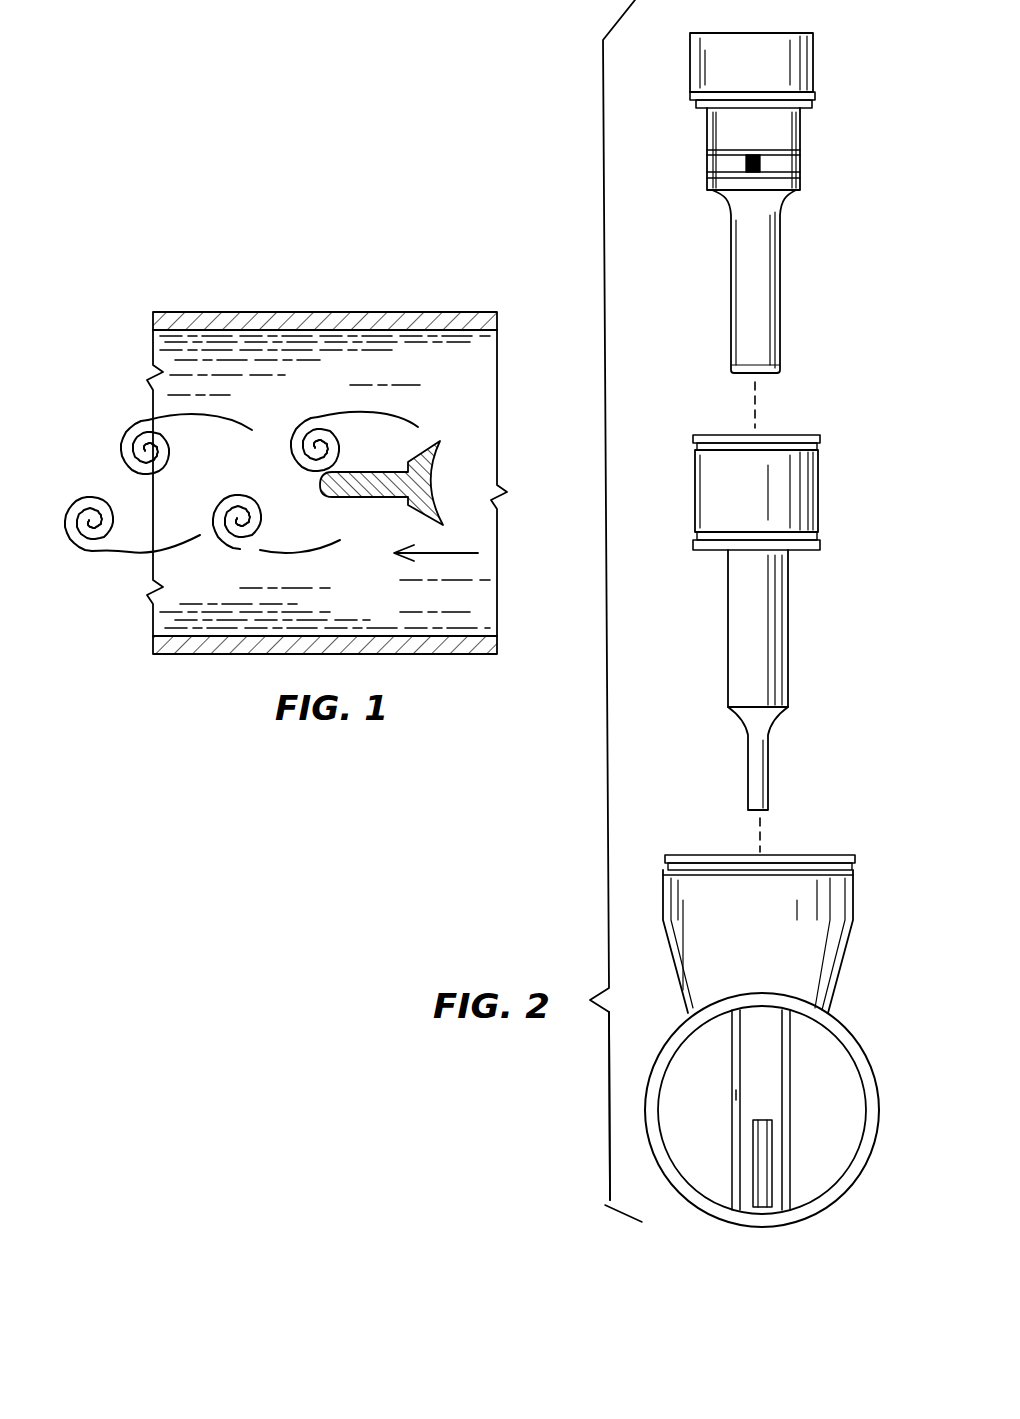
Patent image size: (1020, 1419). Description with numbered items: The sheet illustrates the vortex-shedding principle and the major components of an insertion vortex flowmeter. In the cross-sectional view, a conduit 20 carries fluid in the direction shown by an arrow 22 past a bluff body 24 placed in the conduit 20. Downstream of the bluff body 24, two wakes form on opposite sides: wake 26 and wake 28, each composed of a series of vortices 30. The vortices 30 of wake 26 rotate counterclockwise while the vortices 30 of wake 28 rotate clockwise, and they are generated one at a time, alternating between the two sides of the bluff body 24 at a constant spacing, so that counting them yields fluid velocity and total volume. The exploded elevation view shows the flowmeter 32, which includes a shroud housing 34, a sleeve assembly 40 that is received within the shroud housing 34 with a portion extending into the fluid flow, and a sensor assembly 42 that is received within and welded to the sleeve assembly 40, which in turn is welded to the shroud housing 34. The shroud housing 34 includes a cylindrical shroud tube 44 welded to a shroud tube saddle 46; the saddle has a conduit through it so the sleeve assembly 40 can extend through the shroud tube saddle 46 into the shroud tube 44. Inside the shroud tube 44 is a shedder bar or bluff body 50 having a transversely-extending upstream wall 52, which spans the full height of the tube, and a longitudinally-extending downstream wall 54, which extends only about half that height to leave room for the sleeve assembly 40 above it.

In FIG. 1, the conduit 20 is at (250, 300).
In FIG. 1, the arrow 22 is at (445, 556).
In FIG. 1, the bluff body 24 is at (449, 457).
In FIG. 1, the wake 26 is at (88, 557).
In FIG. 1, the wake 28 is at (88, 463).
In FIG. 1, the vortices 30 is at (331, 413).
In FIG. 2, the flowmeter 32 is at (513, 889).
In FIG. 2, the shroud housing 34 is at (575, 1075).
In FIG. 2, the sleeve assembly 40 is at (697, 648).
In FIG. 2, the sensor assembly 42 is at (680, 240).
In FIG. 2, the shroud tube 44 is at (686, 1048).
In FIG. 2, the shroud tube saddle 46 is at (683, 945).
In FIG. 2, the bluff body 50 is at (738, 1095).
In FIG. 2, the upstream wall 52 is at (767, 1072).
In FIG. 2, the downstream wall 54 is at (767, 1173).